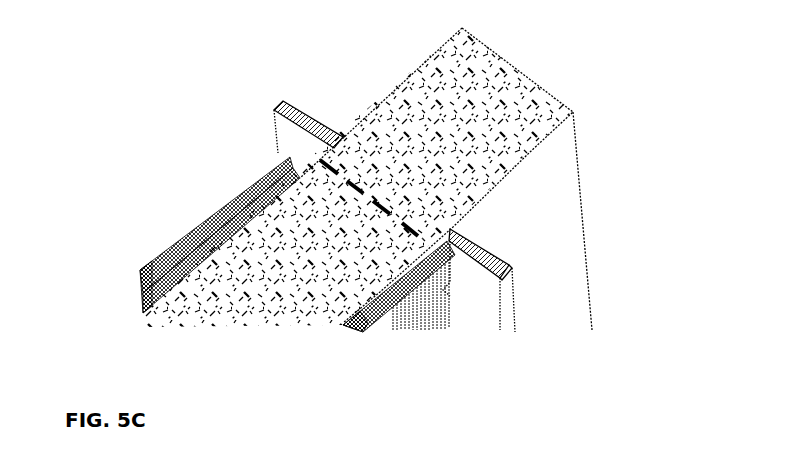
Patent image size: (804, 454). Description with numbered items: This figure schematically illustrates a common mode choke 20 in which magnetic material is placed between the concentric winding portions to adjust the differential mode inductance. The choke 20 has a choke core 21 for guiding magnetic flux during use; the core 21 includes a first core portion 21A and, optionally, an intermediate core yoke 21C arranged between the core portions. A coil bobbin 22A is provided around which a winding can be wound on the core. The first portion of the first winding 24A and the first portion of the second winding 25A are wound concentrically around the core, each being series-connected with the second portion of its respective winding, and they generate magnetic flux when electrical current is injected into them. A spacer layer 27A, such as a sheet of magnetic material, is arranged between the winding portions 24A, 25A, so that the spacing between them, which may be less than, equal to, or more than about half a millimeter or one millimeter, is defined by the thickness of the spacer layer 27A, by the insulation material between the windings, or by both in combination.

The common mode choke 20 is at (218, 60).
The choke core 21 is at (338, 70).
The first core portion 21A is at (263, 320).
The intermediate core yoke 21C is at (417, 90).
The coil bobbin 22A is at (284, 101).
The first portion of the first winding 24A is at (270, 160).
The first portion of the second winding 25A is at (143, 302).
The spacer layer 27A is at (230, 207).